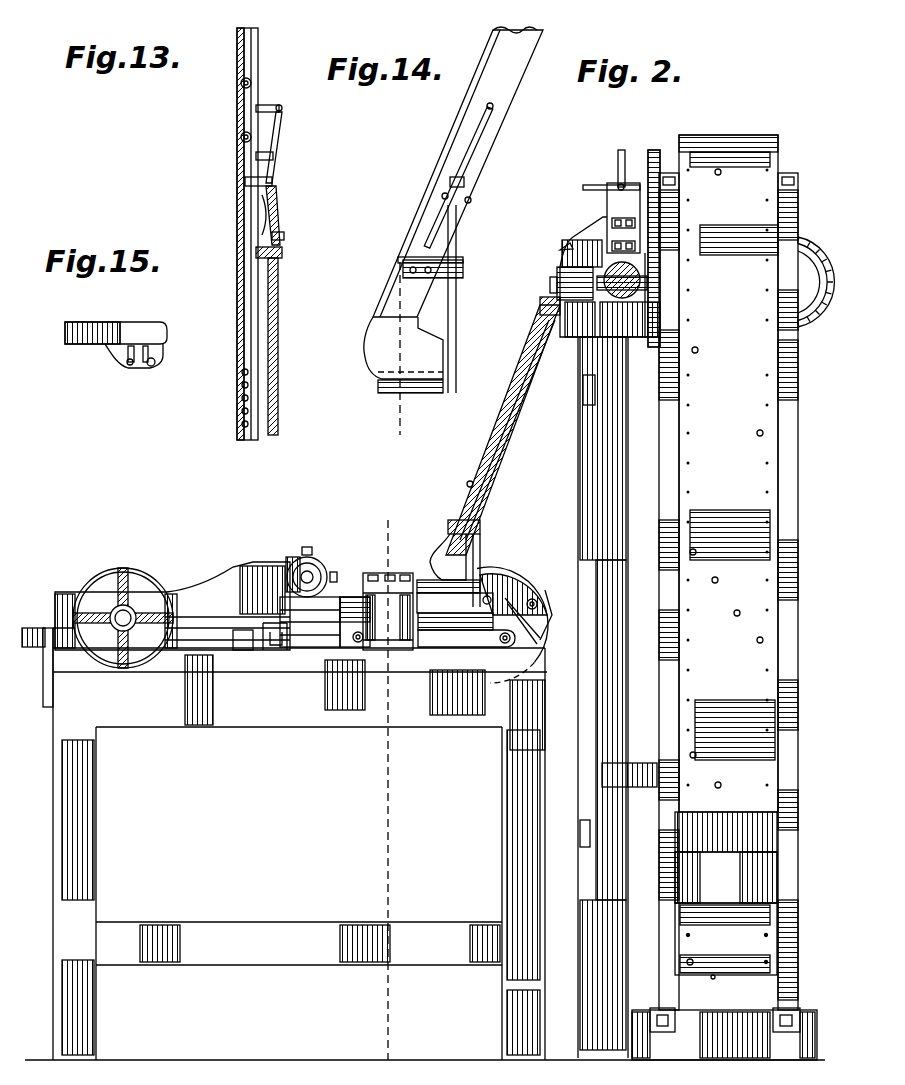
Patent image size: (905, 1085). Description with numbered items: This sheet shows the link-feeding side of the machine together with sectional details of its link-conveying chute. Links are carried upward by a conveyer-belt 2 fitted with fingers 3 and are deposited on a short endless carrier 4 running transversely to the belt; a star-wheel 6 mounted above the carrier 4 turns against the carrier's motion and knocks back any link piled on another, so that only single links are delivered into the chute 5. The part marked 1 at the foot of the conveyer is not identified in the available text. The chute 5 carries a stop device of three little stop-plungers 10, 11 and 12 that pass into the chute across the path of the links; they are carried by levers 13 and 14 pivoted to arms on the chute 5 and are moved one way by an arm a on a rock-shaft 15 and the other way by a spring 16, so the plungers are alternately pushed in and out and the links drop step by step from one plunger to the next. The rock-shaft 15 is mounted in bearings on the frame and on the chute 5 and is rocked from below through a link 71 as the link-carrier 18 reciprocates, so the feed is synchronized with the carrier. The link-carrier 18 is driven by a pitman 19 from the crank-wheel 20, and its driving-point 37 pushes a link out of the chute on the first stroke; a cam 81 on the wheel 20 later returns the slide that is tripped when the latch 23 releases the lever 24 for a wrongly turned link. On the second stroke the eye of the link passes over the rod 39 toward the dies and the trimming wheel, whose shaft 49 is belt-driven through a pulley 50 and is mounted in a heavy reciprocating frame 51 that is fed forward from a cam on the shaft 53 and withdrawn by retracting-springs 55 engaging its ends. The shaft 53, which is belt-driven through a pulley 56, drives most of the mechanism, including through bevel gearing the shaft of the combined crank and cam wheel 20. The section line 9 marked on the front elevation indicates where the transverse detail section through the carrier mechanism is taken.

In FIG. 2, the frame base 1 is at (425, 616).
In FIG. 2, the conveyer-belt 2 is at (728, 473).
In FIG. 2, the fingers 3 is at (722, 172).
In FIG. 2, the short endless carrier 4 is at (808, 246).
In FIG. 13, the link-chute 5 is at (237, 118).
In FIG. 15, the link-chute 5 is at (97, 334).
In FIG. 14, the link-chute 5 is at (483, 133).
In FIG. 2, the link-chute 5 is at (507, 440).
In FIG. 2, the star-wheel 6 is at (619, 166).
In FIG. 2, the section line 9 is at (417, 518).
In FIG. 13, the stop-plunger 10 is at (273, 181).
In FIG. 14, the stop-plunger 10 is at (466, 181).
In FIG. 13, the stop-plunger 11 is at (268, 105).
In FIG. 14, the stop-plunger 11 is at (495, 106).
In FIG. 13, the stop-plunger 12 is at (262, 243).
In FIG. 15, the stop-plunger 12 is at (118, 360).
In FIG. 14, the stop-plunger 12 is at (432, 252).
In FIG. 2, the stop-plunger 12 is at (464, 527).
In FIG. 13, the lever 13 is at (283, 130).
In FIG. 14, the lever 13 is at (478, 122).
In FIG. 2, the lever 13 is at (494, 457).
In FIG. 13, the lever 14 is at (281, 237).
In FIG. 15, the lever 14 is at (131, 364).
In FIG. 14, the lever 14 is at (442, 193).
In FIG. 2, the lever 14 is at (463, 484).
In FIG. 13, the rock-shaft 15 is at (279, 318).
In FIG. 15, the rock-shaft 15 is at (160, 363).
In FIG. 14, the rock-shaft 15 is at (363, 175).
In FIG. 2, the rock-shaft 15 is at (480, 532).
In FIG. 13, the spring 16 is at (264, 207).
In FIG. 2, the link-carrier 18 is at (350, 642).
In FIG. 2, the pitman 19 is at (525, 630).
In FIG. 2, the crank-wheel 20 is at (514, 580).
In FIG. 2, the latch 23 is at (396, 575).
In FIG. 2, the lever 24 is at (371, 575).
In FIG. 2, the driving-point 37 is at (487, 596).
In FIG. 2, the rod 39 is at (348, 596).
In FIG. 2, the shaft 49 is at (317, 566).
In FIG. 2, the pulley 50 is at (295, 562).
In FIG. 2, the reciprocating frame 51 is at (233, 573).
In FIG. 2, the shaft 53 is at (115, 608).
In FIG. 2, the retracting-springs 55 is at (35, 627).
In FIG. 2, the pulley 56 is at (156, 552).
In FIG. 2, the link 71 is at (477, 645).
In FIG. 2, the cam 81 is at (537, 606).
In FIG. 15, the arm a is at (150, 366).
In FIG. 14, the arm a is at (470, 199).
In FIG. 2, the arm a is at (474, 487).